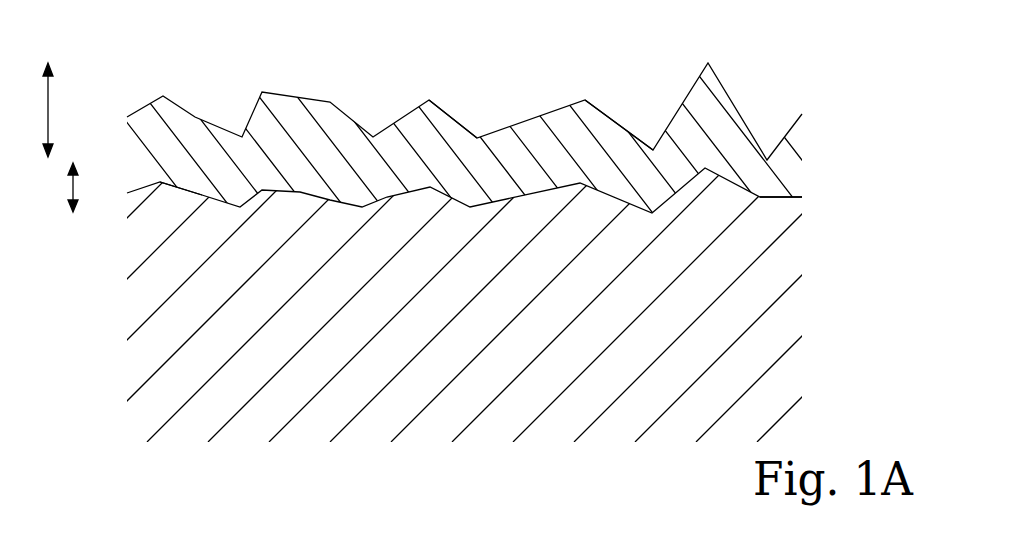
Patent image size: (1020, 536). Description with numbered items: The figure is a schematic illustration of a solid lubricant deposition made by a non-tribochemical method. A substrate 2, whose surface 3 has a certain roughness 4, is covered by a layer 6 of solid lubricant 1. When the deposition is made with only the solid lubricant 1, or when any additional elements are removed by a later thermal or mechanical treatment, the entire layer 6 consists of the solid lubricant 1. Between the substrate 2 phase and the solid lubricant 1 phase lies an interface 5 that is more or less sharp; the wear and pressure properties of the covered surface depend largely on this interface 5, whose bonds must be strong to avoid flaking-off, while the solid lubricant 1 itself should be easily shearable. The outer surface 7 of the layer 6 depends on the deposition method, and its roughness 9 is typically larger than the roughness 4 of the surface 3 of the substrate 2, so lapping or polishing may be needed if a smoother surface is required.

The solid lubricant 1 is at (291, 118).
The substrate 2 is at (625, 420).
The surface of the substrate 3 is at (185, 190).
The roughness of the substrate surface 4 is at (83, 187).
The interface 5 is at (802, 197).
The layer of solid lubricant 6 is at (447, 128).
The surface of the layer 7 is at (585, 100).
The roughness of the layer surface 9 is at (56, 110).